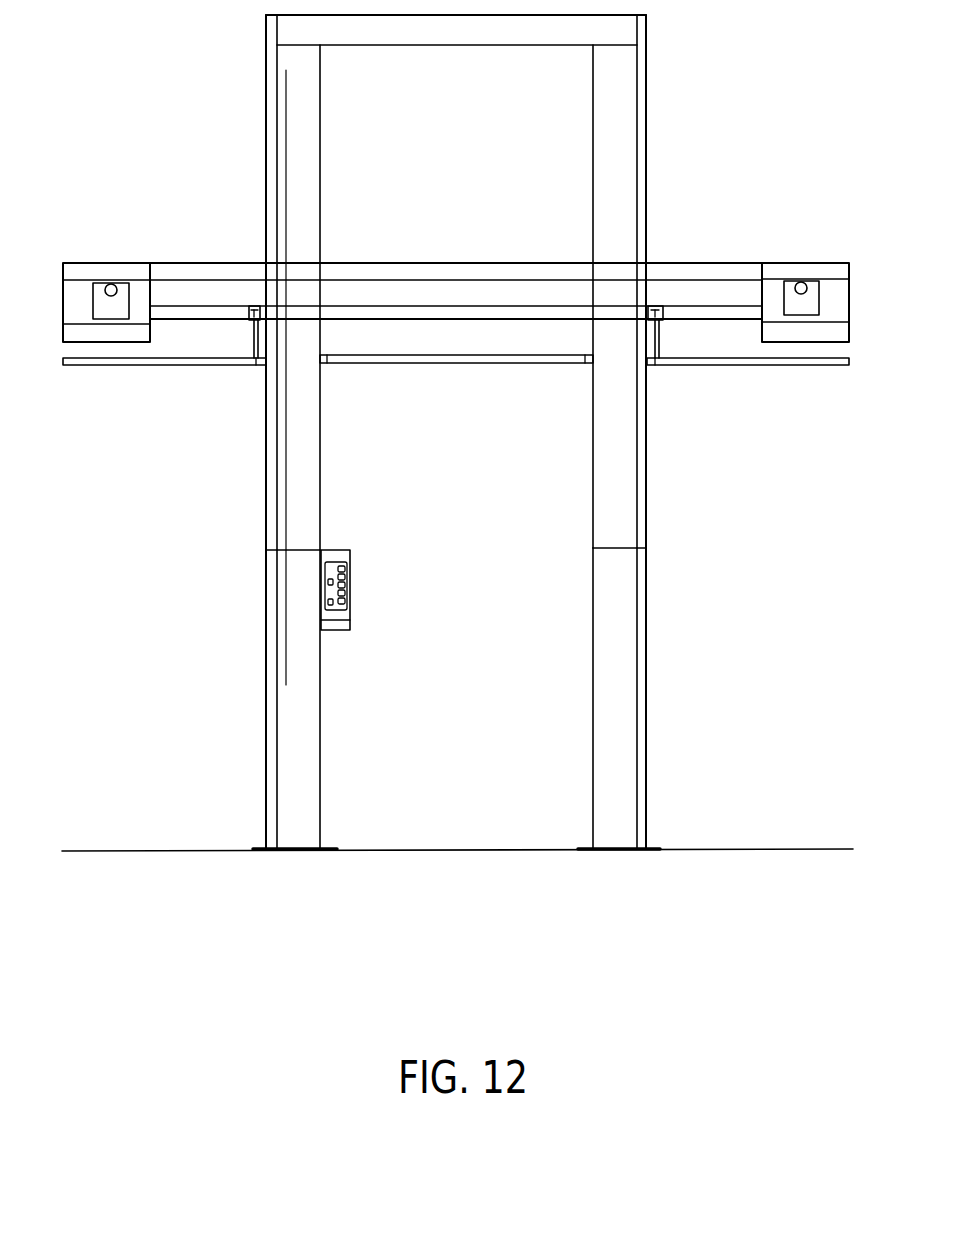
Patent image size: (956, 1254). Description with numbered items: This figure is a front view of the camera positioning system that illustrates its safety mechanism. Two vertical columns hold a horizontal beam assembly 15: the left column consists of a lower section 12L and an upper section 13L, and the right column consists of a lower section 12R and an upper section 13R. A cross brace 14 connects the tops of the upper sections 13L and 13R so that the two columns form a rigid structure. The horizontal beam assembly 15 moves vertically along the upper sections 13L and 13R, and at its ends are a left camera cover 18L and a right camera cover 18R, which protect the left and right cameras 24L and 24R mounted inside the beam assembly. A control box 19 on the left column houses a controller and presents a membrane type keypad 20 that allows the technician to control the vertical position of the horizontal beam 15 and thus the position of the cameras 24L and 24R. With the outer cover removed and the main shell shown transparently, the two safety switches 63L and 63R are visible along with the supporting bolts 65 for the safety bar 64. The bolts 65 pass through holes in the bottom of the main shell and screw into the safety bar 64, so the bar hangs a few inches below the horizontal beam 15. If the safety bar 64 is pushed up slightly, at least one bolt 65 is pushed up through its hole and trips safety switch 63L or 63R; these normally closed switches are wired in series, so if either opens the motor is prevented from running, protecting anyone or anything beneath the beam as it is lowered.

The lower section 12L is at (277, 693).
The lower section 12R is at (638, 693).
The upper section 13L is at (275, 415).
The upper section 13R is at (642, 412).
The cross brace 14 is at (377, 23).
The horizontal beam assembly 15 is at (372, 283).
The left camera cover 18L is at (97, 268).
The right camera cover 18R is at (812, 270).
The control box 19 is at (342, 555).
The membrane type keypad 20 is at (345, 598).
The left camera 24L is at (103, 305).
The right camera 24R is at (815, 298).
The safety switch 63L is at (250, 307).
The safety switch 63R is at (663, 310).
The safety bar 64 is at (787, 366).
The supporting bolts 65 is at (252, 338).